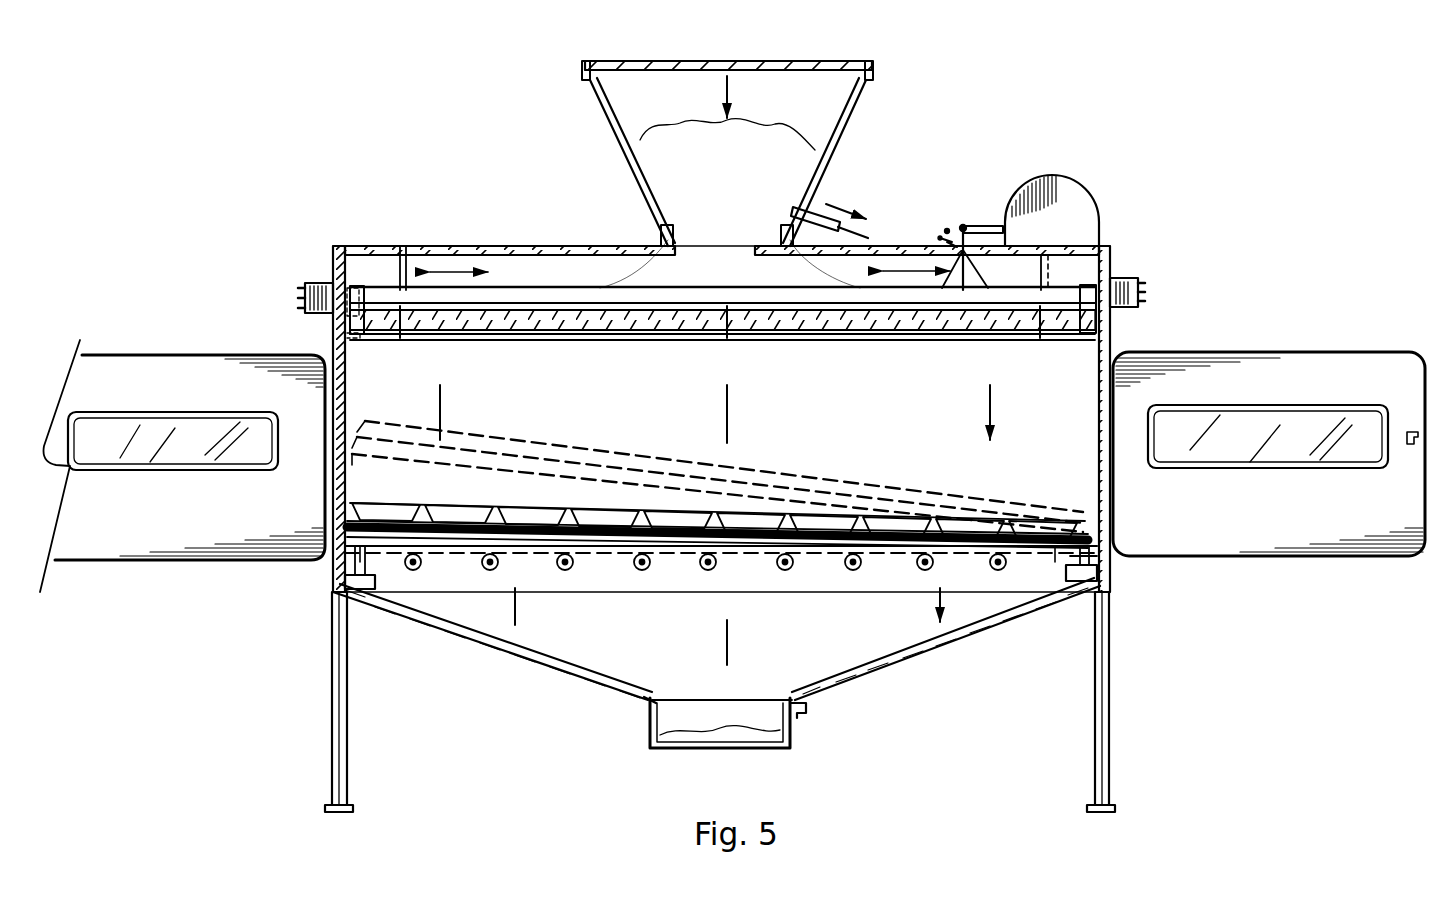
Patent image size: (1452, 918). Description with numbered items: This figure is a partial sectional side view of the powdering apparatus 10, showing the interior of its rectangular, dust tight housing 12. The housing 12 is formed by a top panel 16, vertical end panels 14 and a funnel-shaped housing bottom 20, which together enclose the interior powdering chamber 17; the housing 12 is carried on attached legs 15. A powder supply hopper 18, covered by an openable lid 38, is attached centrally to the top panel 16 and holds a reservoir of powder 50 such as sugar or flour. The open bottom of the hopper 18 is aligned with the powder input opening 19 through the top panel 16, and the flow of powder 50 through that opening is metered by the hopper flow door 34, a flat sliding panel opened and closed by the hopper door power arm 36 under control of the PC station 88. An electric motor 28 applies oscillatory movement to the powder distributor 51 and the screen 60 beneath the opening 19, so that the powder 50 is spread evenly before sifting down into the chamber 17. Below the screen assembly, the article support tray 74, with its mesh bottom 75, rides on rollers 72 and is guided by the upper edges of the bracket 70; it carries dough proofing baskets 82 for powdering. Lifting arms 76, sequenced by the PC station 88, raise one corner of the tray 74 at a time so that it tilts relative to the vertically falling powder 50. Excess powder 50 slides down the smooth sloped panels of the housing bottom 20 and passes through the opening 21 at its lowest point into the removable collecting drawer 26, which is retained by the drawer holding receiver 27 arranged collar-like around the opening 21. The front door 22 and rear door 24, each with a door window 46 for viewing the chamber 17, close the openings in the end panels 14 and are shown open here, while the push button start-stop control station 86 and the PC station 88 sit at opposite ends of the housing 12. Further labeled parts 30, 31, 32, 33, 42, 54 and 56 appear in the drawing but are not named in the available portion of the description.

The apparatus 10 is at (378, 122).
The housing 12 is at (343, 248).
The vertical end panels 14 is at (343, 563).
The legs 15 is at (332, 735).
The top panel 16 is at (494, 248).
The interior powdering chamber 17 is at (1068, 393).
The powder supply hopper 18 is at (848, 103).
The powder input opening 19 is at (716, 245).
The funnel-shaped housing bottom 20 is at (977, 630).
The opening 21 is at (750, 700).
The front door 22 is at (158, 545).
The rear door 24 is at (1350, 520).
The removable collecting drawer 26 is at (792, 730).
The collecting drawer holding receiver 27 is at (648, 705).
The electric motor 28 is at (1082, 188).
The drive arms 30 is at (960, 226).
The drive post 31 is at (964, 224).
The reciprocating motion 32 is at (886, 271).
The connecting links 33 is at (968, 252).
The hopper flow door 34 is at (869, 237).
The hopper door power arm 36 is at (820, 196).
The openable lid 38 is at (628, 61).
The pivot connection 42 is at (948, 244).
The door windows 46 is at (172, 435).
The powder 50 is at (692, 178).
The powder distributor 51 is at (1112, 280).
The support posts 54 is at (407, 280).
The upper screen deck 56 is at (715, 334).
The screen 60 is at (485, 271).
The bracket 70 is at (527, 546).
The rollers 72 is at (708, 570).
The article support tray 74 is at (475, 521).
The mesh bottom 75 is at (457, 552).
The lifting arms 76 is at (352, 478).
The proofing basket 82 is at (838, 520).
The push button start-stop control station 86 is at (1140, 290).
The PC station 88 is at (310, 286).